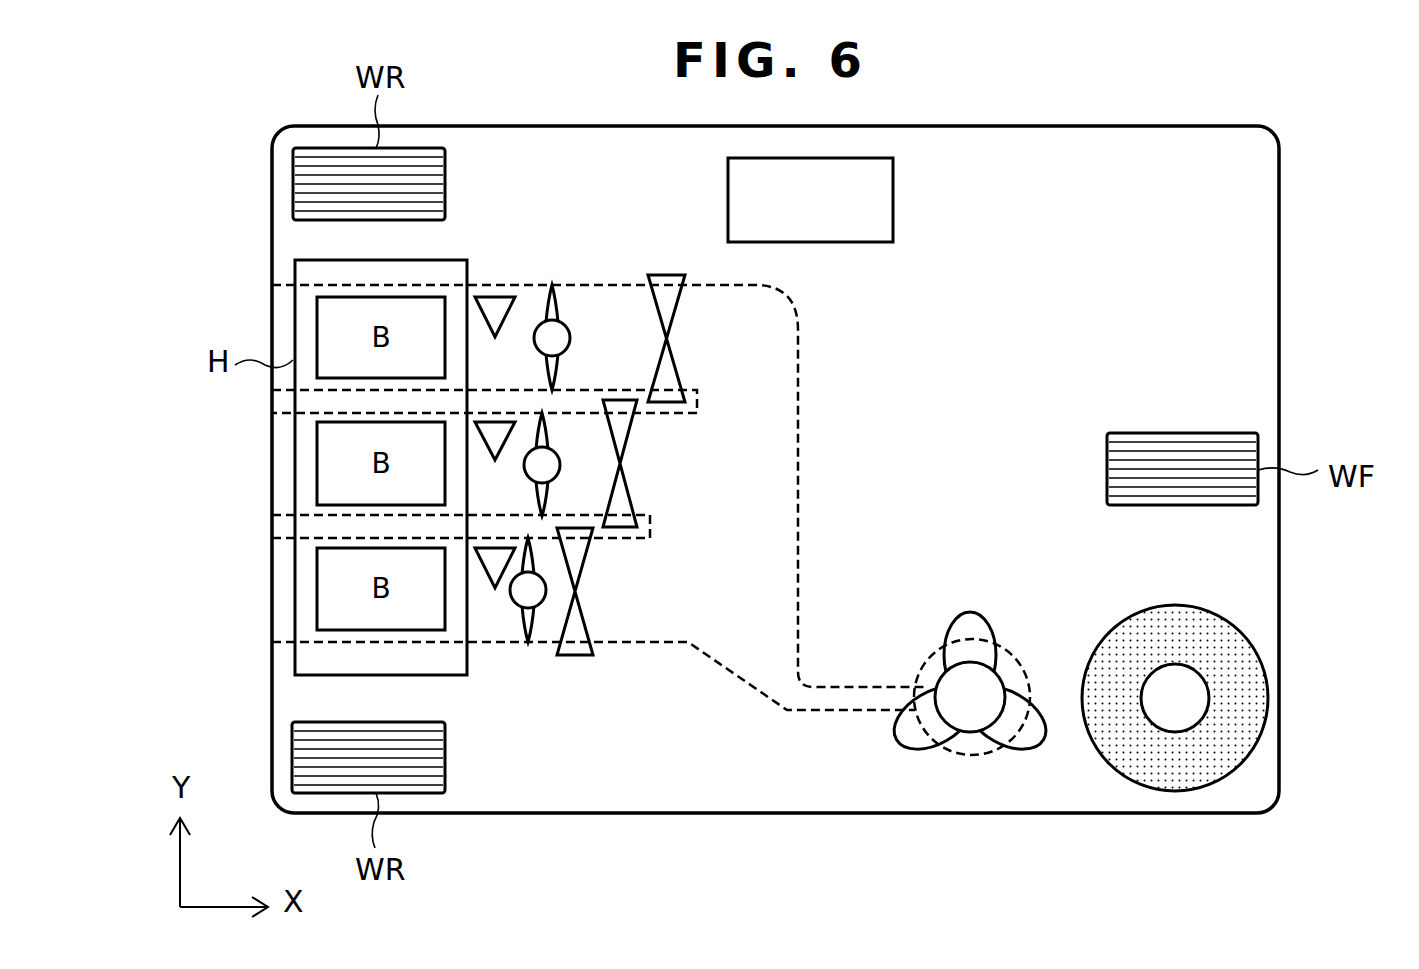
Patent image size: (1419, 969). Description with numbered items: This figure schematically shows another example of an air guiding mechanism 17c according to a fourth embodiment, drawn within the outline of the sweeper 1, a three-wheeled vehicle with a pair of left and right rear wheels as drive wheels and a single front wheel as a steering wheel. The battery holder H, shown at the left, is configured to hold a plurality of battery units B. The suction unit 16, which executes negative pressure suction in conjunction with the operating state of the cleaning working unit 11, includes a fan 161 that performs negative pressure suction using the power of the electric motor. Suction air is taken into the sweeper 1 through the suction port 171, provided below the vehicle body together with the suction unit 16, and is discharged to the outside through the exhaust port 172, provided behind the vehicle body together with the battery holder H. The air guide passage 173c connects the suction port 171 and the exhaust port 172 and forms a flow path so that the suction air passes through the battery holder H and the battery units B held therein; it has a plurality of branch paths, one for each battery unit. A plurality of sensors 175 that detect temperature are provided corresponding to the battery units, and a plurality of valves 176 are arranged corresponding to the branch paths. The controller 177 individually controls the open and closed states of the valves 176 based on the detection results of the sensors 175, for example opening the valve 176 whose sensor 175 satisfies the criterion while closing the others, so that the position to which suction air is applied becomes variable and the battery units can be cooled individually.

The sweeper 1 is at (1060, 126).
The cleaning working unit 11 is at (1270, 700).
The suction unit 16 is at (1015, 748).
The fan 161 is at (552, 285).
The suction port 171 is at (963, 757).
The exhaust port 172 is at (268, 313).
The air guide passage 173c is at (790, 712).
The sensor 175 is at (493, 290).
The valve 176 is at (663, 272).
The controller 177 is at (810, 200).
The air guiding mechanism 17c is at (680, 735).